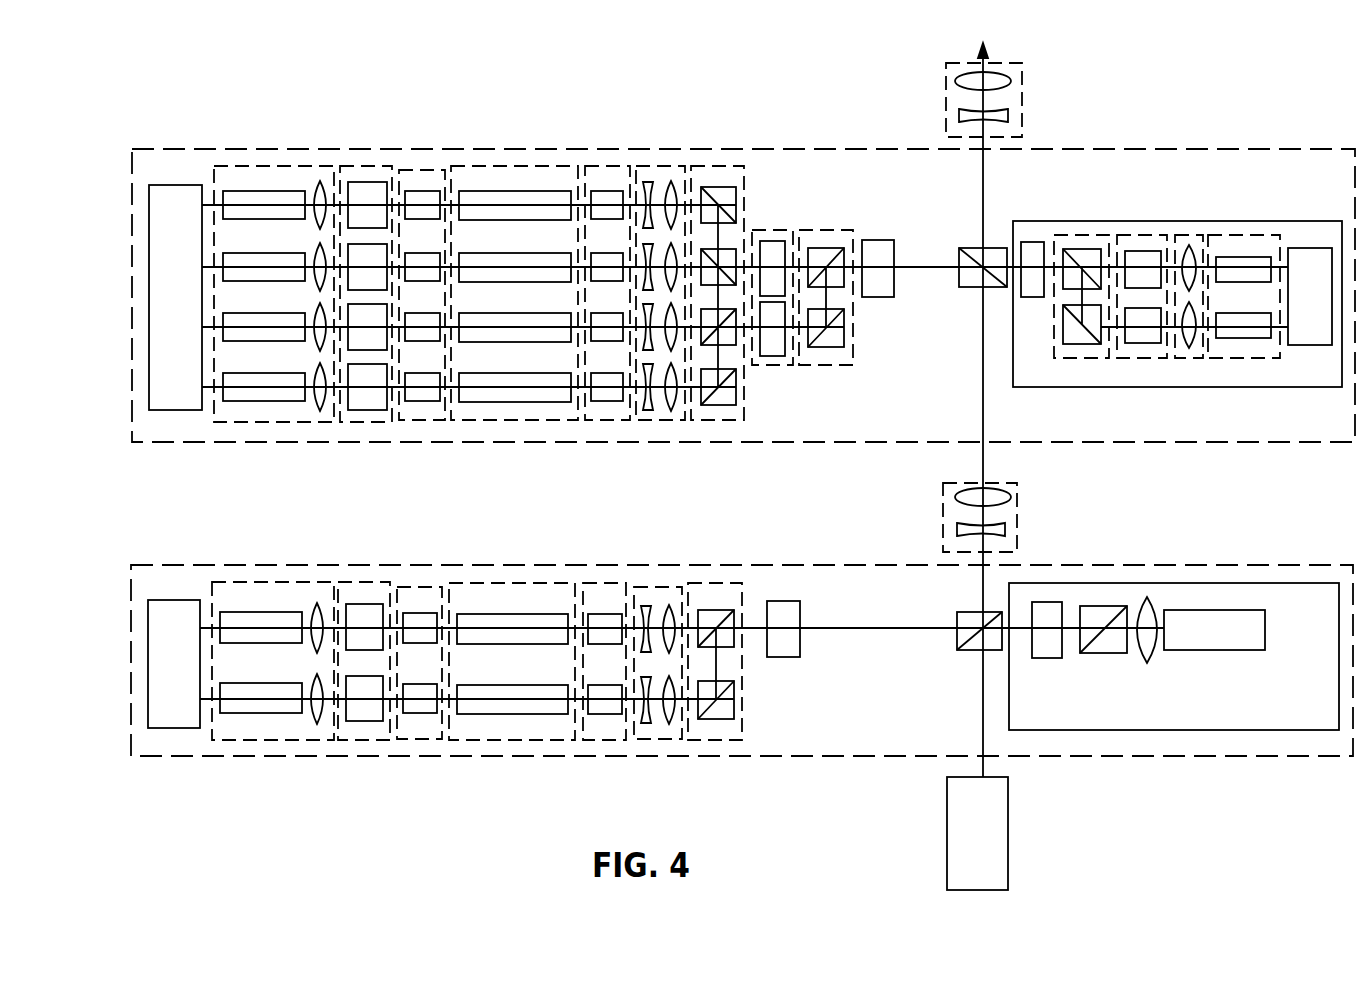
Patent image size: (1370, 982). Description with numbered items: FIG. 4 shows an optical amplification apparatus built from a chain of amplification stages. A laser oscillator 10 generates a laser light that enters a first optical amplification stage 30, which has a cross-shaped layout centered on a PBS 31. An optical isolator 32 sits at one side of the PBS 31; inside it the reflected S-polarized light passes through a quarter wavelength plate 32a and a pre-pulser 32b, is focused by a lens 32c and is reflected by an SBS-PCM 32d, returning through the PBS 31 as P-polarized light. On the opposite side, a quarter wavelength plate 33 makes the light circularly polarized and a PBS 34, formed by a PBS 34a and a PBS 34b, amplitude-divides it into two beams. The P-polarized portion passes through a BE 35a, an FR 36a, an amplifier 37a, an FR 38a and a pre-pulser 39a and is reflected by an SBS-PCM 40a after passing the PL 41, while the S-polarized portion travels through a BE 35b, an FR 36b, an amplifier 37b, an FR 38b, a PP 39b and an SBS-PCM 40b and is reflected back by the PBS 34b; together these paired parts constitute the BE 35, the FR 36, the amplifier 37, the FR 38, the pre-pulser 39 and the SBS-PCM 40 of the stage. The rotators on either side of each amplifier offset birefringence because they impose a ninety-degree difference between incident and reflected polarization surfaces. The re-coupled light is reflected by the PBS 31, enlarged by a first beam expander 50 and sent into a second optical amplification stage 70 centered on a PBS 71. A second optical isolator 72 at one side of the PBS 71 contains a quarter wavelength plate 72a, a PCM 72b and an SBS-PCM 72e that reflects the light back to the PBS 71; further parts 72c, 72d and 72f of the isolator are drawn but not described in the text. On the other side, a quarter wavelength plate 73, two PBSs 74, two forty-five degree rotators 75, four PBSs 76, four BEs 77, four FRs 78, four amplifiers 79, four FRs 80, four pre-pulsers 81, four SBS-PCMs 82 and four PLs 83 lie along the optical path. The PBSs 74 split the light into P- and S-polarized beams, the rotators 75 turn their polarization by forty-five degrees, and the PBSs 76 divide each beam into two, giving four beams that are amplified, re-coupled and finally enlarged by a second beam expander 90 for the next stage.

The laser oscillator 10 is at (1008, 830).
The first optical amplification stage 30 is at (1097, 565).
The PBS 31 is at (957, 643).
The optical isolator 32 is at (1170, 583).
The quarter wavelength plate 32a is at (1048, 658).
The pre-pulser 32b is at (1108, 653).
The lens 32c is at (1150, 663).
The SBS-PCM 32d is at (1220, 650).
The quarter wavelength plate 33 is at (778, 658).
The PBS 34 is at (743, 590).
The PBS 34a is at (717, 610).
The PBS 34b is at (717, 719).
The BE 35 is at (672, 587).
The BE 35a is at (646, 606).
The BE 35b is at (650, 723).
The FR 36 is at (598, 583).
The FR 36a is at (605, 614).
The FR 36b is at (603, 714).
The amplifier 37 is at (482, 583).
The amplifier 37a is at (517, 614).
The amplifier 37b is at (510, 714).
The FR 38 is at (405, 587).
The FR 38a is at (428, 613).
The FR 38b is at (423, 713).
The pre-pulser 39 is at (345, 582).
The pre-pulser 39a is at (372, 604).
The PP 39b is at (372, 721).
The SBS-PCM 40 is at (243, 582).
The SBS-PCM 40a is at (292, 612).
The SBS-PCM 40b is at (292, 713).
The PL 41 is at (175, 600).
The first beam expander 50 is at (943, 515).
The second optical amplification stage 70 is at (1097, 149).
The PBS 71 is at (958, 258).
The second optical isolator 72 is at (1170, 221).
The quarter wavelength plate 72a is at (1035, 242).
The PCM 72b is at (1082, 358).
The wave plate 72c is at (1138, 358).
The lens 72d is at (1198, 358).
The SBS-PCM 72e is at (1250, 358).
The laser driver 72f is at (1312, 345).
The quarter wavelength plate 73 is at (877, 240).
The PBS 74 is at (837, 230).
The 45° rotator 75 is at (783, 230).
The PBS 76 is at (745, 175).
The BE 77 is at (670, 166).
The FR 78 is at (622, 166).
The amplifier 79 is at (520, 166).
The FR 80 is at (437, 170).
The pre-pulser 81 is at (378, 166).
The SBS-PCM 82 is at (277, 166).
The PL 83 is at (177, 185).
The second beam expander 90 is at (946, 98).